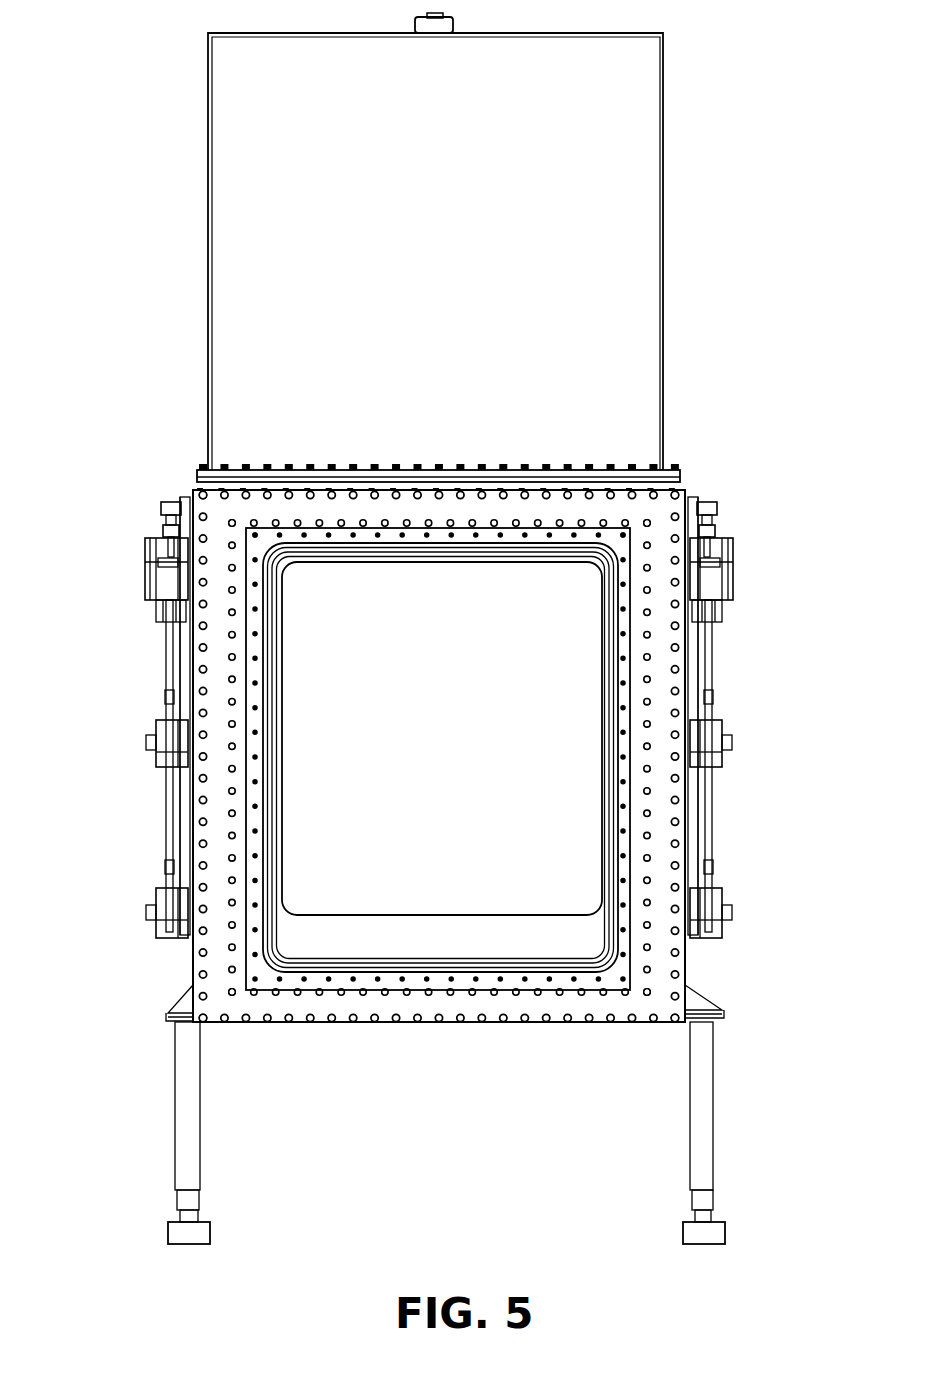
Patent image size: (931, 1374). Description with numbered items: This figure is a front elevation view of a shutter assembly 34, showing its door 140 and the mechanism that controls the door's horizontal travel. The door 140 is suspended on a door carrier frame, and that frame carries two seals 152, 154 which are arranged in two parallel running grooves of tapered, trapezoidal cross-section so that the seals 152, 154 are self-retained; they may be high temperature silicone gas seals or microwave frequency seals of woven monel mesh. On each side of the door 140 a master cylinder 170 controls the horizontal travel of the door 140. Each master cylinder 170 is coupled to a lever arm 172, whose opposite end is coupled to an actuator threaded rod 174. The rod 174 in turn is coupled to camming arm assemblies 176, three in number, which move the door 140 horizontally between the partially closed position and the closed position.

The door 140 is at (638, 210).
The shutter assembly 34 is at (686, 436).
The seal 152 is at (278, 940).
The seal 154 is at (274, 950).
The lever arm 172 is at (700, 504).
The master cylinder 170 is at (733, 577).
The actuator threaded rod 174 is at (712, 665).
The camming arm assemblies 176 is at (708, 765).